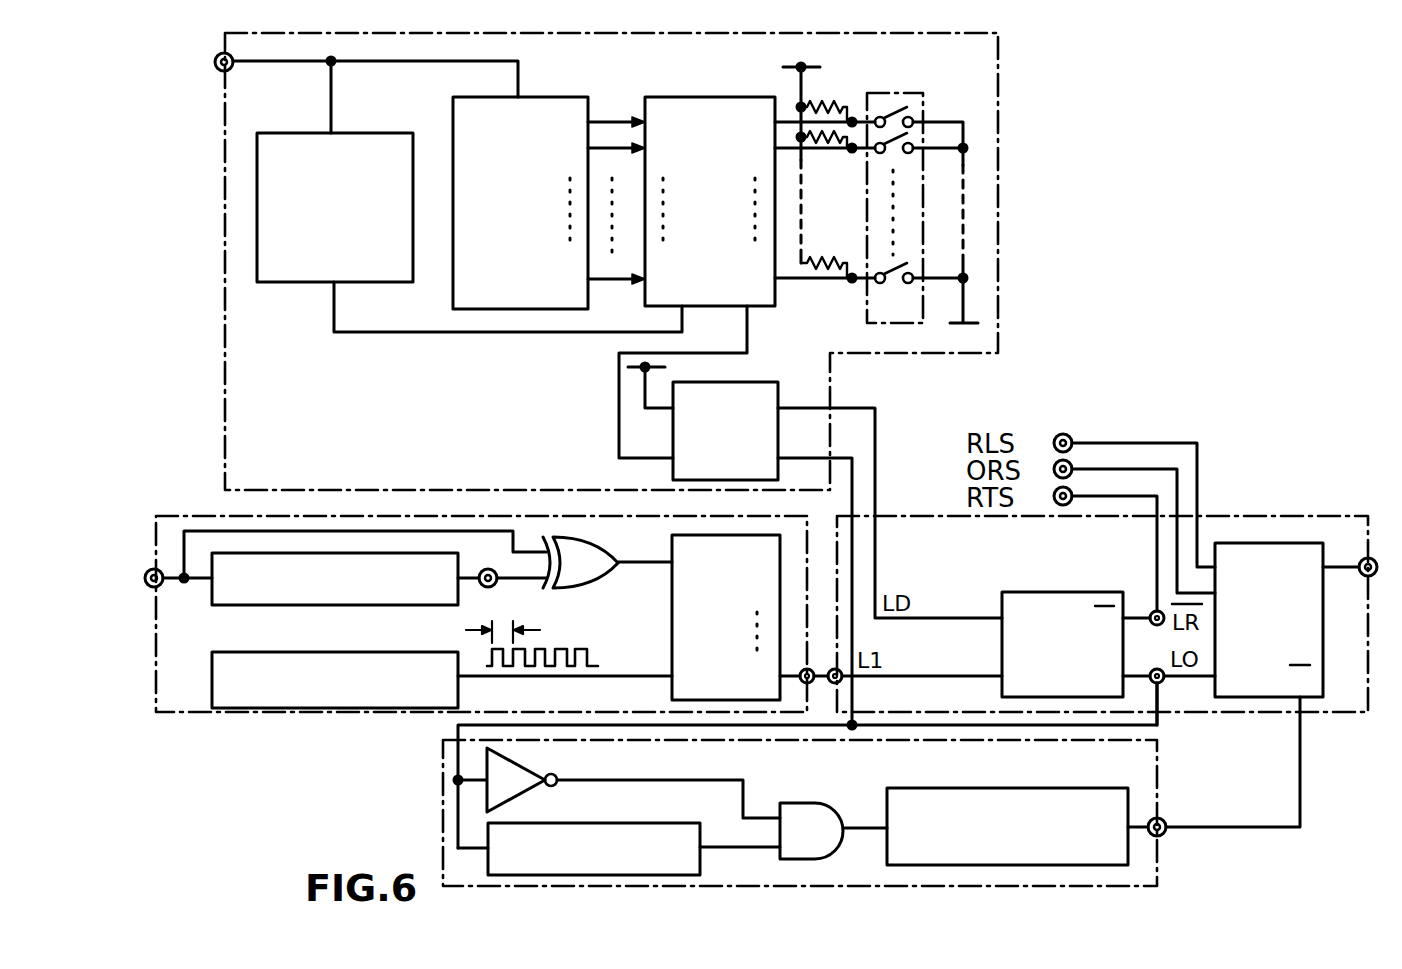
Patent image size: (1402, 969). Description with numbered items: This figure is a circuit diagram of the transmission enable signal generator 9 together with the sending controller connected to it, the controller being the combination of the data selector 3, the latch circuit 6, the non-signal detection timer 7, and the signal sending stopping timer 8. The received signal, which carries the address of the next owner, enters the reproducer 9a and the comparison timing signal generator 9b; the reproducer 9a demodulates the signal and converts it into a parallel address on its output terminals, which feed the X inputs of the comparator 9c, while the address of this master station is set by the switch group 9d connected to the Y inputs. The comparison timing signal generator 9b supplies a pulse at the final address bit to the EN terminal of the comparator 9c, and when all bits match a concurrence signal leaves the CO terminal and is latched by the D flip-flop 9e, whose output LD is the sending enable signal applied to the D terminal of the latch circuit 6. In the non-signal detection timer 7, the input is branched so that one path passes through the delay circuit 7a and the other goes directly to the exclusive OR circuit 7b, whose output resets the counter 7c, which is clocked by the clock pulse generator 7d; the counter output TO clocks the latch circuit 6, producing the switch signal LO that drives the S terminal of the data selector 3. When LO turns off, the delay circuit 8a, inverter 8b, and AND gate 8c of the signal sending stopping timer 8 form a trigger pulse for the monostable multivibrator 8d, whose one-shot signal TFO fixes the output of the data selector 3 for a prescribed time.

The data selector 3 is at (1285, 543).
The latch circuit 6 is at (1085, 592).
The non-signal detection timer 7 is at (192, 516).
The delay circuit 7a is at (460, 553).
The exclusive OR circuit 7b is at (606, 553).
The counter 7c is at (672, 617).
The clock pulse generator 7d is at (400, 652).
The signal sending stopping timer 8 is at (1160, 768).
The delay circuit 8a is at (664, 823).
The inverter 8b is at (540, 767).
The AND gate 8c is at (810, 803).
The monostable multivibrator 8d is at (1073, 788).
The transmission enable signal generator 9 is at (998, 67).
The reproducer 9a is at (575, 97).
The comparison timing signal generator 9b is at (376, 133).
The comparator 9c is at (728, 97).
The switch group 9d is at (893, 93).
The D flip-flop 9e is at (756, 382).